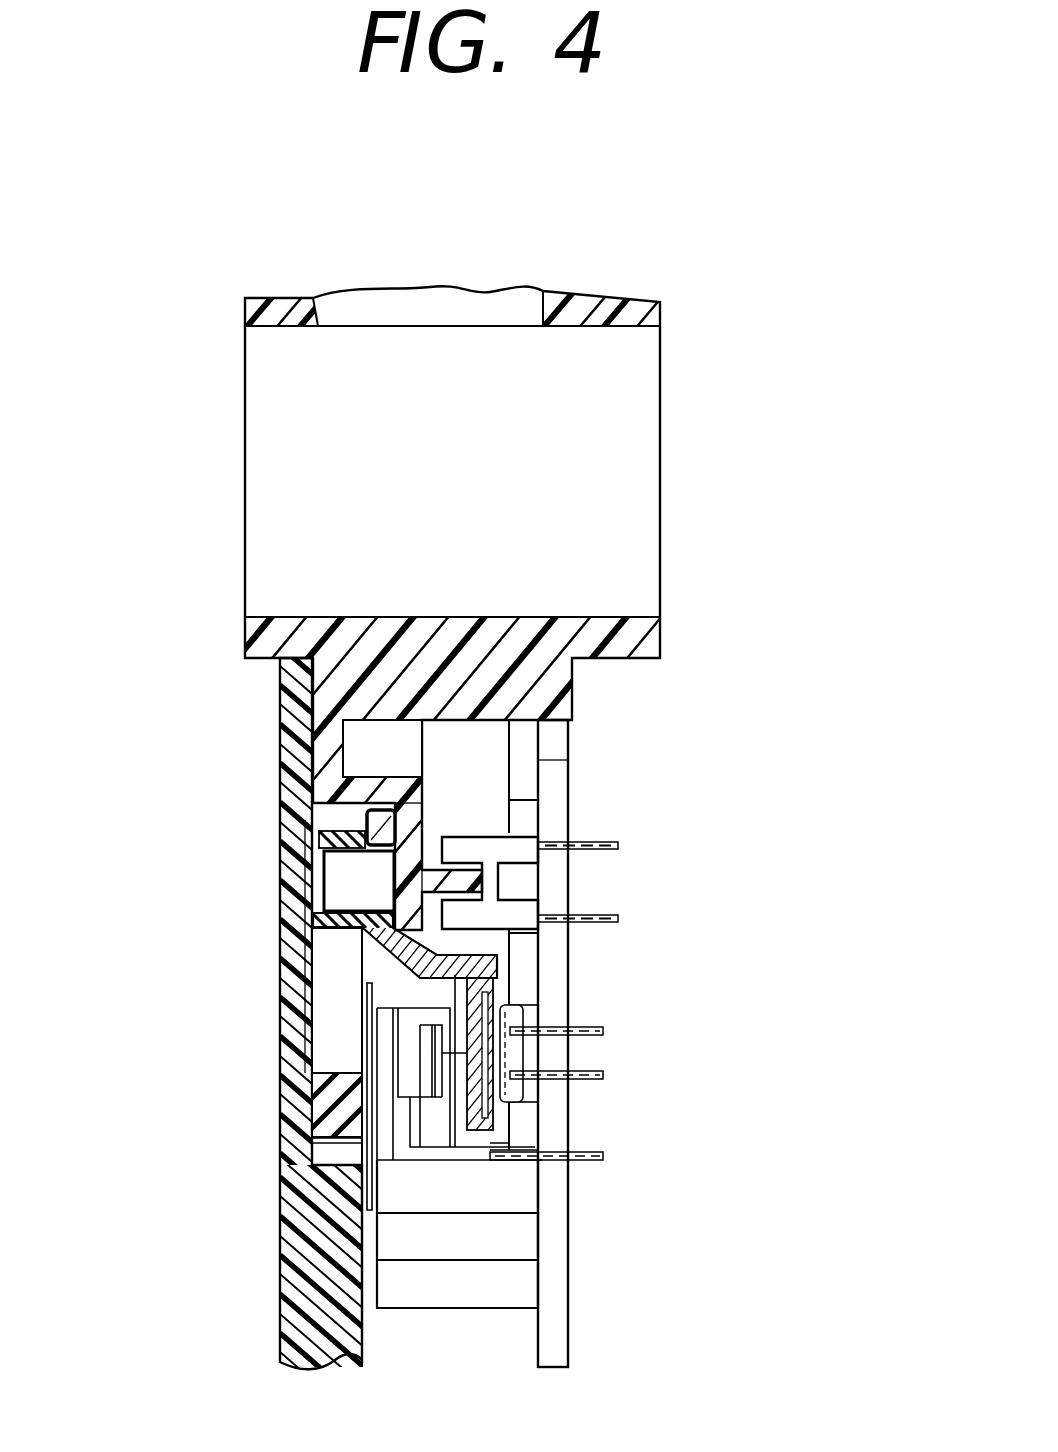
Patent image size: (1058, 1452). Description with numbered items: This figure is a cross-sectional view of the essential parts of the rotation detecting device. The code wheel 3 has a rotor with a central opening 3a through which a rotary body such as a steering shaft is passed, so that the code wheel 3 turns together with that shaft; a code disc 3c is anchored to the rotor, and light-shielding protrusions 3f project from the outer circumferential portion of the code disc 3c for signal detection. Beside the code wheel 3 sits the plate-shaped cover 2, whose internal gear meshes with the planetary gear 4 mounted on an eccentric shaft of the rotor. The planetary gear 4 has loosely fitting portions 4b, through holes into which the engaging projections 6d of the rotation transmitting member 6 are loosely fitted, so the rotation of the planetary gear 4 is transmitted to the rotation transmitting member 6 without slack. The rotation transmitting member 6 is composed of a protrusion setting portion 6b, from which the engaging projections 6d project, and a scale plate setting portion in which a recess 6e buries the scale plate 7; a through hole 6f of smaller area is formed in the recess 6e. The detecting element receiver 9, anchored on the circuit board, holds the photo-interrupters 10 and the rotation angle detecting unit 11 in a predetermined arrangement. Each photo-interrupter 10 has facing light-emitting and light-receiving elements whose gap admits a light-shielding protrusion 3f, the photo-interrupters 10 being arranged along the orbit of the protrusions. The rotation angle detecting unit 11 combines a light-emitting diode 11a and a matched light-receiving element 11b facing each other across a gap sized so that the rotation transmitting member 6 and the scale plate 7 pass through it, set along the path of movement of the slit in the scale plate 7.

The cover 2 is at (300, 1277).
The code wheel 3 is at (587, 296).
The central opening 3a is at (637, 488).
The code disc 3c is at (394, 898).
The light-shielding protrusions 3f is at (482, 882).
The planetary gear 4 is at (325, 1115).
The loosely fitting portions 4b is at (327, 1032).
The rotation transmitting member 6 is at (475, 957).
The protrusion setting portion 6b is at (363, 950).
The engaging projections 6d is at (349, 831).
The recess 6e is at (520, 1112).
The through hole 6f is at (363, 978).
The scale plate 7 is at (367, 978).
The detecting element receiver 9 is at (568, 1322).
The photo-interrupter 10 is at (473, 833).
The rotation angle detecting unit 11 is at (763, 1012).
The light-emitting diode 11a is at (525, 1027).
The light-receiving element 11b is at (525, 1077).